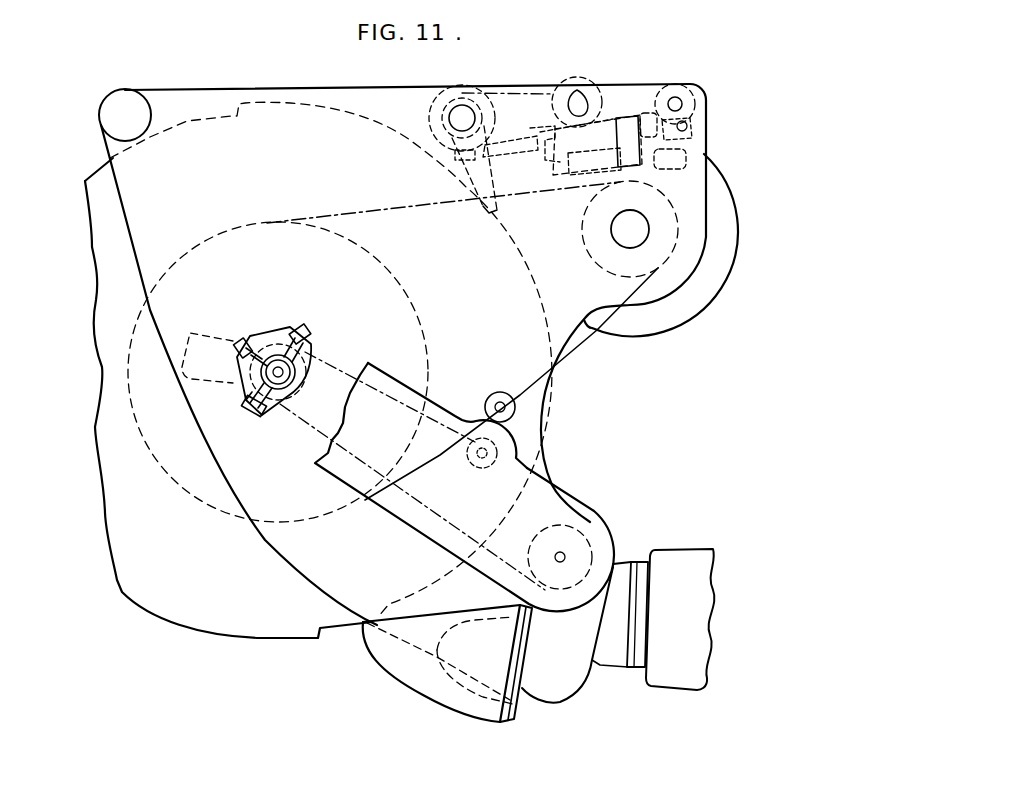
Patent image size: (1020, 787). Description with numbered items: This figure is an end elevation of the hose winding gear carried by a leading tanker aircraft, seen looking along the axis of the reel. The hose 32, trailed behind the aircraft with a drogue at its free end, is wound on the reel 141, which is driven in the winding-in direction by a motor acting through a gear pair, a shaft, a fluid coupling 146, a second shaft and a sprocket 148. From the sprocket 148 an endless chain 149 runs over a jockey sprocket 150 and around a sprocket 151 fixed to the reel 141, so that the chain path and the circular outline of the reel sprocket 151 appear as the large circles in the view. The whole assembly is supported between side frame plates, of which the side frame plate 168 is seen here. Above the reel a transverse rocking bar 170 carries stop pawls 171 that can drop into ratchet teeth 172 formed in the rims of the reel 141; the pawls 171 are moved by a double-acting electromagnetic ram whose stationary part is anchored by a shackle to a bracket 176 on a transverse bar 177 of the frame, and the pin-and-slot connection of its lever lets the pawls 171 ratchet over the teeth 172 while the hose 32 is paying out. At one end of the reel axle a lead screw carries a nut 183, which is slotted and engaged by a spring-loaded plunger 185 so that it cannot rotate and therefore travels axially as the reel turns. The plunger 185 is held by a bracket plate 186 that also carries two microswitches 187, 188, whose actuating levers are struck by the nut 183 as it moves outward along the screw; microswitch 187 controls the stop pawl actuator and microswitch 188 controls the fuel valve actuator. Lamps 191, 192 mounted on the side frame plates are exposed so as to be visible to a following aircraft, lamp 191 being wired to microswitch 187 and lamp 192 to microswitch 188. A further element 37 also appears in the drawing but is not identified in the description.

The hose 32 is at (620, 578).
The shaft 37 is at (200, 333).
The reel 141 is at (207, 598).
The fluid coupling 146 is at (638, 335).
The sprocket 148 is at (590, 252).
The endless chain 149 is at (361, 213).
The jockey sprocket 150 is at (487, 393).
The sprocket on the reel 151 is at (426, 330).
The side frame plate 168 is at (560, 678).
The transverse rocking bar 170 is at (448, 103).
The stop pawls 171 is at (475, 177).
The ratchet teeth 172 is at (495, 217).
The bracket 176 is at (596, 102).
The transverse bar 177 is at (678, 95).
The nut 183 is at (305, 380).
The spring-loaded plunger 185 is at (254, 358).
The bracket plate 186 is at (242, 378).
The microswitch 187 is at (303, 338).
The microswitch 188 is at (255, 405).
The lamp 191 is at (513, 703).
The lamp 192 is at (517, 663).